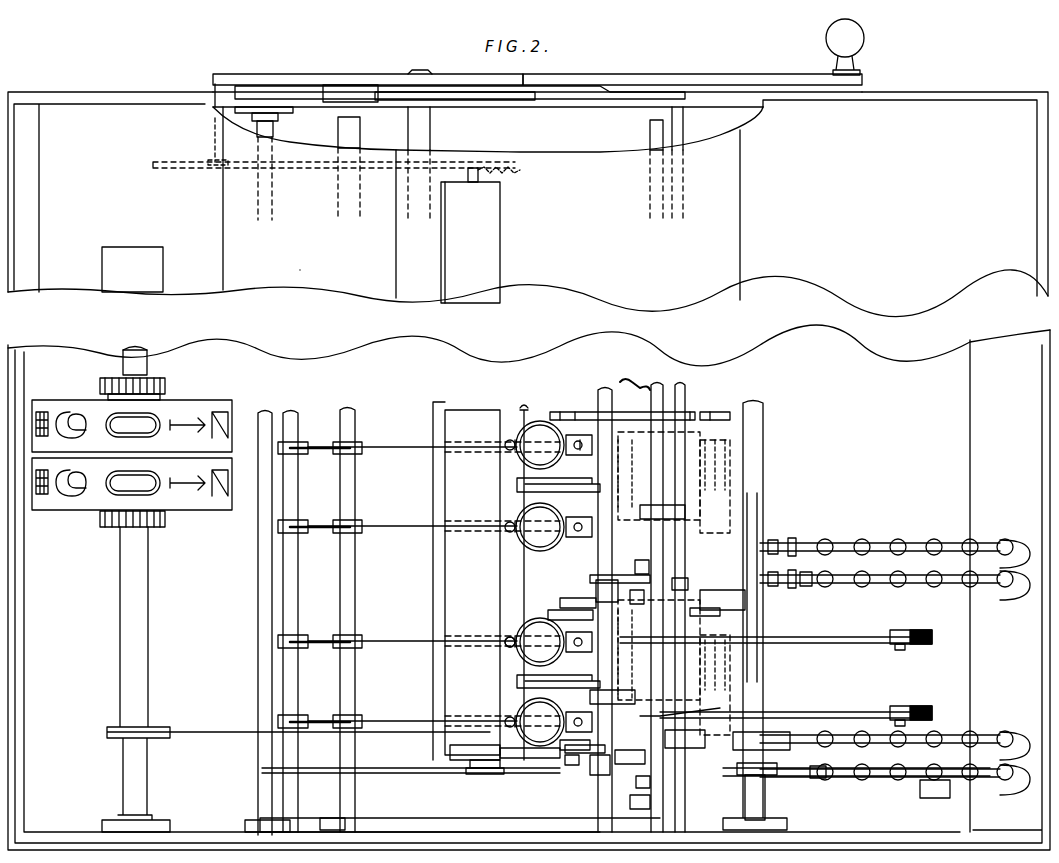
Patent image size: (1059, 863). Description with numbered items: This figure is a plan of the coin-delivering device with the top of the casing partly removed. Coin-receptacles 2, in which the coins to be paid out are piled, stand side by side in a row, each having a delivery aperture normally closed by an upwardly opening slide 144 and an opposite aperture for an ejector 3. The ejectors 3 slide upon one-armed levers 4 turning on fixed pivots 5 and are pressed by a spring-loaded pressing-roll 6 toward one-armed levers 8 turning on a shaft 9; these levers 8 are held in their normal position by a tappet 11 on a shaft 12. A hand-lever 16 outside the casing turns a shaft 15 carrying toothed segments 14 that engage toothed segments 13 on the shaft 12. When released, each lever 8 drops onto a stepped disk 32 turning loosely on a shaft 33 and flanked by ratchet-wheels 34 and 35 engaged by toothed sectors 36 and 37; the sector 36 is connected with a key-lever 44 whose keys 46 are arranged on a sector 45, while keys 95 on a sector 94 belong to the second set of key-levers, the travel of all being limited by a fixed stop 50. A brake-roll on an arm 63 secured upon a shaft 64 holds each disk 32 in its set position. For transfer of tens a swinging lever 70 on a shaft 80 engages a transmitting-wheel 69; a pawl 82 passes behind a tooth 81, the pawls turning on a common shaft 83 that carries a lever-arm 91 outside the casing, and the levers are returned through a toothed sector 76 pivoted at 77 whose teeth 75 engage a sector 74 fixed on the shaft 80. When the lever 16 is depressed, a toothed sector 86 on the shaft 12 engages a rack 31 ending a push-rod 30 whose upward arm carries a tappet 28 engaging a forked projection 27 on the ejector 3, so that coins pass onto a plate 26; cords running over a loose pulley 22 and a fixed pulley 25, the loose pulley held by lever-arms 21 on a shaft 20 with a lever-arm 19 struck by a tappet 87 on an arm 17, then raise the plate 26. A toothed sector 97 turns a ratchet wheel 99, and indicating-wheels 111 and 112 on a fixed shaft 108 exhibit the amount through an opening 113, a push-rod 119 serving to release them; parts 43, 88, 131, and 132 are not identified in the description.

The coin-receptacles 2 is at (536, 430).
The ejector 3 is at (628, 515).
The one-armed levers 4 is at (803, 643).
The fixed pivots 5 is at (900, 650).
The pressing-roll 6 is at (560, 752).
The one-armed levers 8 is at (406, 450).
The shaft 9 is at (296, 567).
The tappet 11 is at (370, 444).
The shaft 12 is at (360, 136).
The toothed segments 13 is at (352, 88).
The toothed segments 14 is at (470, 94).
The shaft 15 is at (426, 74).
The hand-lever 16 is at (760, 80).
The arm 17 is at (324, 82).
The lever-arm 19 is at (168, 172).
The shaft 20 is at (272, 188).
The lever-arms 21 is at (365, 170).
The loose pulley 22 is at (522, 176).
The fixed pulley 25 is at (505, 178).
The plate 26 is at (466, 471).
The forked projection 27 is at (690, 712).
The tappet 28 is at (650, 138).
The push-rod 30 is at (500, 818).
The rack 31 is at (590, 755).
The stepped disk 32 is at (686, 510).
The shaft 33 is at (630, 392).
The ratchet-wheel 34 is at (632, 764).
The ratchet-wheel 35 is at (598, 760).
The toothed sector 36 is at (745, 775).
The toothed sector 37 is at (700, 748).
The post 43 is at (765, 798).
The key-lever 44 is at (834, 777).
The sector 45 is at (830, 586).
The keys 46 is at (888, 588).
The fixed stop 50 is at (935, 790).
The arm 63 is at (548, 488).
The shaft 64 is at (524, 662).
The transmitting-wheel 69 is at (570, 412).
The swinging lever 70 is at (552, 604).
The sector 74 is at (640, 574).
The teeth 75 is at (640, 606).
The toothed sector 76 is at (708, 598).
The pivot 77 is at (763, 612).
The shaft 80 is at (598, 566).
The tooth 81 is at (596, 592).
The pawl 82 is at (580, 602).
The common shaft 83 is at (684, 126).
The toothed sector 86 is at (330, 112).
The tappet 87 is at (215, 170).
The casing 88 is at (309, 263).
The lever-arm 91 is at (612, 90).
The sector 94 is at (878, 545).
The keys 95 is at (822, 540).
The toothed sector 97 is at (585, 752).
The ratchet wheel 99 is at (540, 758).
The fixed shaft 108 is at (145, 350).
The indicating-wheel 111 is at (228, 400).
The indicating-wheel 112 is at (205, 500).
The opening 113 is at (135, 284).
The push-rod 119 is at (806, 780).
The frame 131 is at (730, 480).
The frame 132 is at (730, 695).
The slide 144 is at (505, 640).